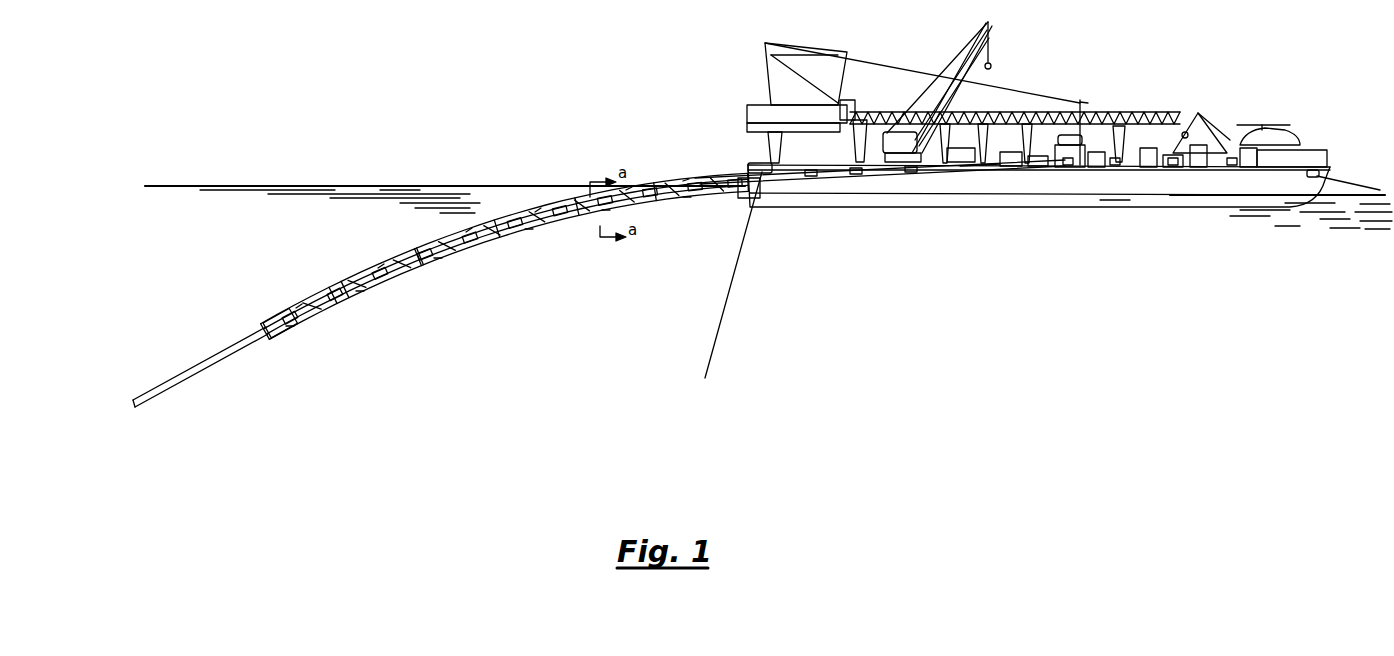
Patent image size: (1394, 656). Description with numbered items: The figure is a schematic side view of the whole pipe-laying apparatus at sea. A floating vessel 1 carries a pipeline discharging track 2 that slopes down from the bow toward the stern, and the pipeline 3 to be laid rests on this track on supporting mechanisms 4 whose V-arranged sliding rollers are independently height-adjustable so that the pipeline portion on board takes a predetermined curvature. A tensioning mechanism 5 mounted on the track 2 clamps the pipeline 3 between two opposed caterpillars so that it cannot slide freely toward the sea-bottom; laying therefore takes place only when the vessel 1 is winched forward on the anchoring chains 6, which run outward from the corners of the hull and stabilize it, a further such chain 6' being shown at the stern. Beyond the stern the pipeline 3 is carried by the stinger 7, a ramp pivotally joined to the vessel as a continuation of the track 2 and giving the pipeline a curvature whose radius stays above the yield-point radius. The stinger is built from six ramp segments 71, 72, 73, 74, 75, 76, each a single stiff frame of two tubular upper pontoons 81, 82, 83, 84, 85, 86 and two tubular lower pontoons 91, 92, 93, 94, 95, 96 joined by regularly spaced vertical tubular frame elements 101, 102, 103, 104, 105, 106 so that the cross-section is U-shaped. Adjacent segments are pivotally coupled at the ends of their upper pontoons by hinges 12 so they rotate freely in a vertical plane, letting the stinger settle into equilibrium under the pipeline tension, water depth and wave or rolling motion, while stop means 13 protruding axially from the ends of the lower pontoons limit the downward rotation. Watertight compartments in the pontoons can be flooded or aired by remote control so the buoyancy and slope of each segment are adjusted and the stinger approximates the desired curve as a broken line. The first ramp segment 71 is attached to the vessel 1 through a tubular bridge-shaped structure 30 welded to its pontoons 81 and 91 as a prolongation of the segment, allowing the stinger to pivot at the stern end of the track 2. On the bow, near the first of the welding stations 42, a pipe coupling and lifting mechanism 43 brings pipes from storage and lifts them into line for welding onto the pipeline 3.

The floating vessel 1 is at (1132, 188).
The pipeline discharging track 2 is at (970, 168).
The pipeline 3 is at (230, 358).
The supporting mechanisms 4 is at (762, 172).
The tensioning mechanism 5 is at (970, 150).
The anchoring chains 6 is at (1038, 256).
The cable 6' is at (1312, 267).
The stinger 7 is at (497, 258).
The first ramp segment 71 is at (702, 197).
The second ramp segment 72 is at (641, 200).
The third ramp segment 73 is at (545, 227).
The fourth ramp segment 74 is at (462, 255).
The fifth ramp segment 75 is at (383, 285).
The sixth ramp segment 76 is at (310, 323).
The upper pontoons 81 is at (685, 186).
The upper pontoons 82 is at (628, 192).
The upper pontoons 83 is at (537, 216).
The upper pontoons 84 is at (468, 232).
The upper pontoons 85 is at (380, 268).
The upper pontoons 86 is at (298, 308).
The lower pontoons 91 is at (687, 200).
The lower pontoons 92 is at (602, 212).
The lower pontoons 93 is at (530, 232).
The lower pontoons 94 is at (440, 258).
The lower pontoons 95 is at (360, 298).
The lower pontoons 96 is at (290, 330).
The vertical frame elements 101 is at (712, 173).
The vertical frame elements 102 is at (620, 210).
The vertical frame elements 103 is at (522, 218).
The vertical frame elements 104 is at (452, 235).
The vertical frame elements 105 is at (368, 273).
The vertical frame elements 106 is at (283, 320).
The hinges 12 is at (333, 288).
The stop means 13 is at (345, 298).
The tubular bridge-shaped structure 30 is at (744, 204).
The welding stations 42 is at (1199, 118).
The pipe coupling and lifting mechanism 43 is at (1277, 140).